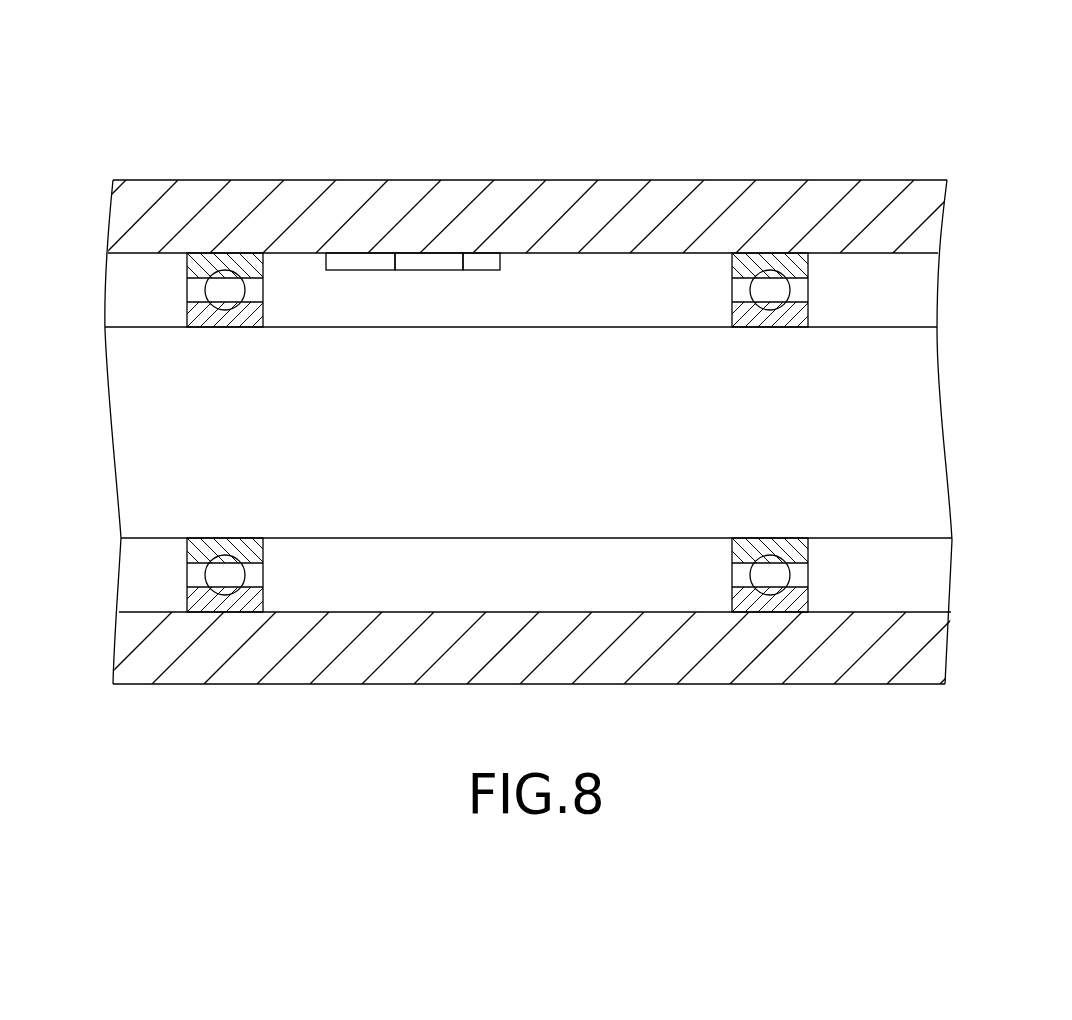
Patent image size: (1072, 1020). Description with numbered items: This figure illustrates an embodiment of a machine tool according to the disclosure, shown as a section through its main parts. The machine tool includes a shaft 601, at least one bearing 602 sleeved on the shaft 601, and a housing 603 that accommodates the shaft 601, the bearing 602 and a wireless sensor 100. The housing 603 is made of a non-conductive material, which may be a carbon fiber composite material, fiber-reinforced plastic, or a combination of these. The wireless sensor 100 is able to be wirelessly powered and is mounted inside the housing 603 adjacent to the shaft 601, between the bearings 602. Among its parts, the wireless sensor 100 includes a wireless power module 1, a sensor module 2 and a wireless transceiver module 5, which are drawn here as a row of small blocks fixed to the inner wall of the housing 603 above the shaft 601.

The wireless power module 1 is at (350, 267).
The sensor module 2 is at (483, 262).
The wireless transceiver module 5 is at (435, 260).
The wireless sensor 100 is at (267, 216).
The shaft 601 is at (898, 427).
The bearing 602 is at (808, 288).
The housing 603 is at (688, 210).